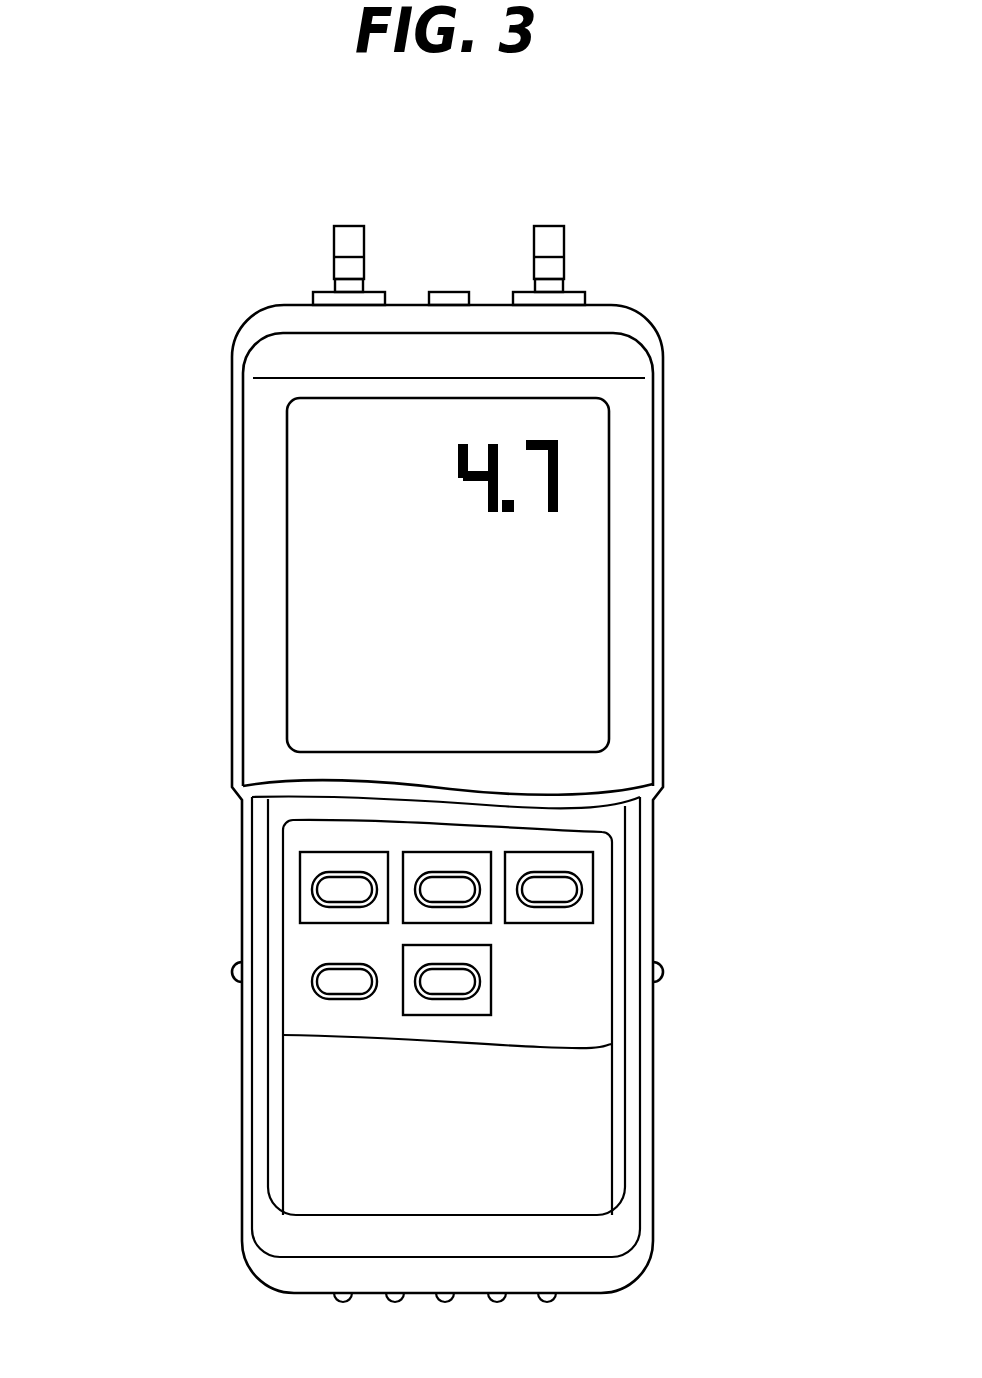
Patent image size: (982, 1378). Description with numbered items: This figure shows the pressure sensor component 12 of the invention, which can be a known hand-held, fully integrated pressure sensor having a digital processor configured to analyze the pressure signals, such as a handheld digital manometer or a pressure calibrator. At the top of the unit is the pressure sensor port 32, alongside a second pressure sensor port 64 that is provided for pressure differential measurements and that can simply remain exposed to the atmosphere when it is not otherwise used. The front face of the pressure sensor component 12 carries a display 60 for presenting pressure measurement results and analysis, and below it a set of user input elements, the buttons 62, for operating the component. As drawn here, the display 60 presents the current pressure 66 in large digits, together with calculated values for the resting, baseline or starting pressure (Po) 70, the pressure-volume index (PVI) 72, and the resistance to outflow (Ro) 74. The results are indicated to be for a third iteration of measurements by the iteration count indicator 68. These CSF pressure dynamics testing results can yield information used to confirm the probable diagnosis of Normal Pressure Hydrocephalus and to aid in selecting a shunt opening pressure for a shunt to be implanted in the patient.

The pressure sensor component 12 is at (230, 563).
The pressure sensor port 32 is at (335, 265).
The second pressure sensor port 64 is at (563, 263).
The display 60 is at (583, 511).
The current pressure 66 is at (563, 472).
The third iteration indicator (n=3) 68 is at (598, 593).
The resting, baseline or starting pressure (Po) 70 is at (597, 637).
The pressure-volume index (PVI) 72 is at (598, 683).
The resistance to outflow (Ro) 74 is at (595, 727).
The buttons 62 is at (312, 889).